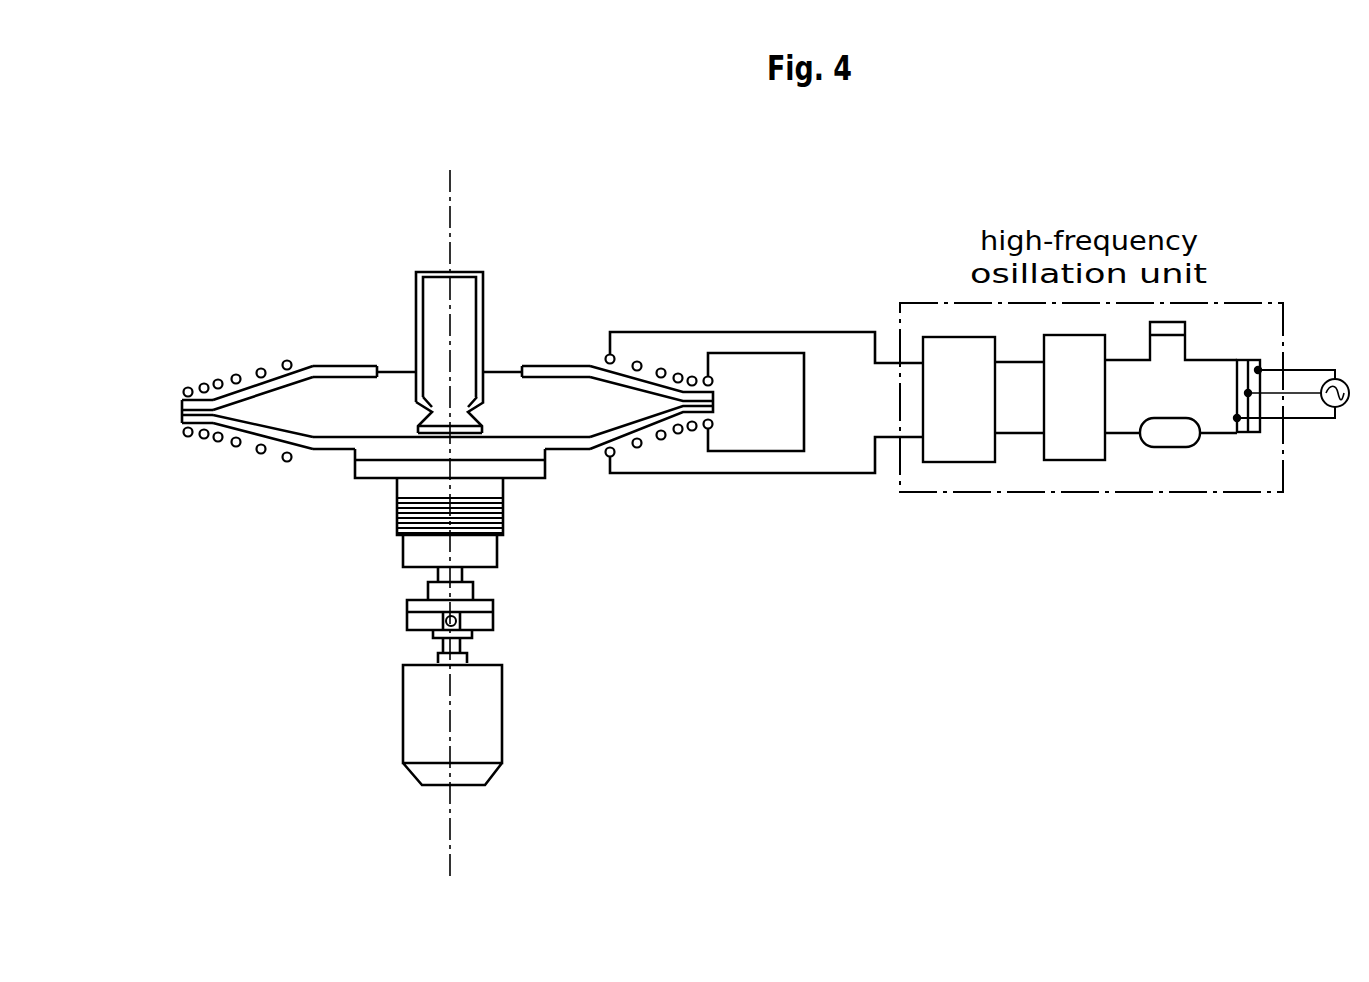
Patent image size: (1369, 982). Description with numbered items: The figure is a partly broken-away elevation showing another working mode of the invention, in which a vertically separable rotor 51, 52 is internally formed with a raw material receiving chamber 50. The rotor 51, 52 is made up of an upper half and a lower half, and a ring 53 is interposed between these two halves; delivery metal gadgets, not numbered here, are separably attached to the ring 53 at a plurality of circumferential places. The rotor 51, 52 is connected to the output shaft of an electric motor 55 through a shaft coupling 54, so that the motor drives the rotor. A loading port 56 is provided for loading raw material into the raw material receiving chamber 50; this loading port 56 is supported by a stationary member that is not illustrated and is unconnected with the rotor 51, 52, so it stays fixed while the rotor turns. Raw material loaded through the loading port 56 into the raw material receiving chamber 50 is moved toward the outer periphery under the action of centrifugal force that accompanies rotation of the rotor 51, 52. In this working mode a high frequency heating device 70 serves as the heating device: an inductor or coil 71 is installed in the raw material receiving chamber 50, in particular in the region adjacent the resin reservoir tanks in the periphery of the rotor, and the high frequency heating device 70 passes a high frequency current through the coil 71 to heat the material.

The raw material receiving chamber 50 is at (447, 395).
The upper half of rotor 51 is at (548, 366).
The lower half of rotor 52 is at (563, 450).
The ring 53 is at (732, 410).
The shaft coupling 54 is at (497, 620).
The electric motor 55 is at (502, 716).
The loading port 56 is at (483, 296).
The high frequency heating device 70 is at (807, 473).
The inductor (coil) 71 is at (638, 362).